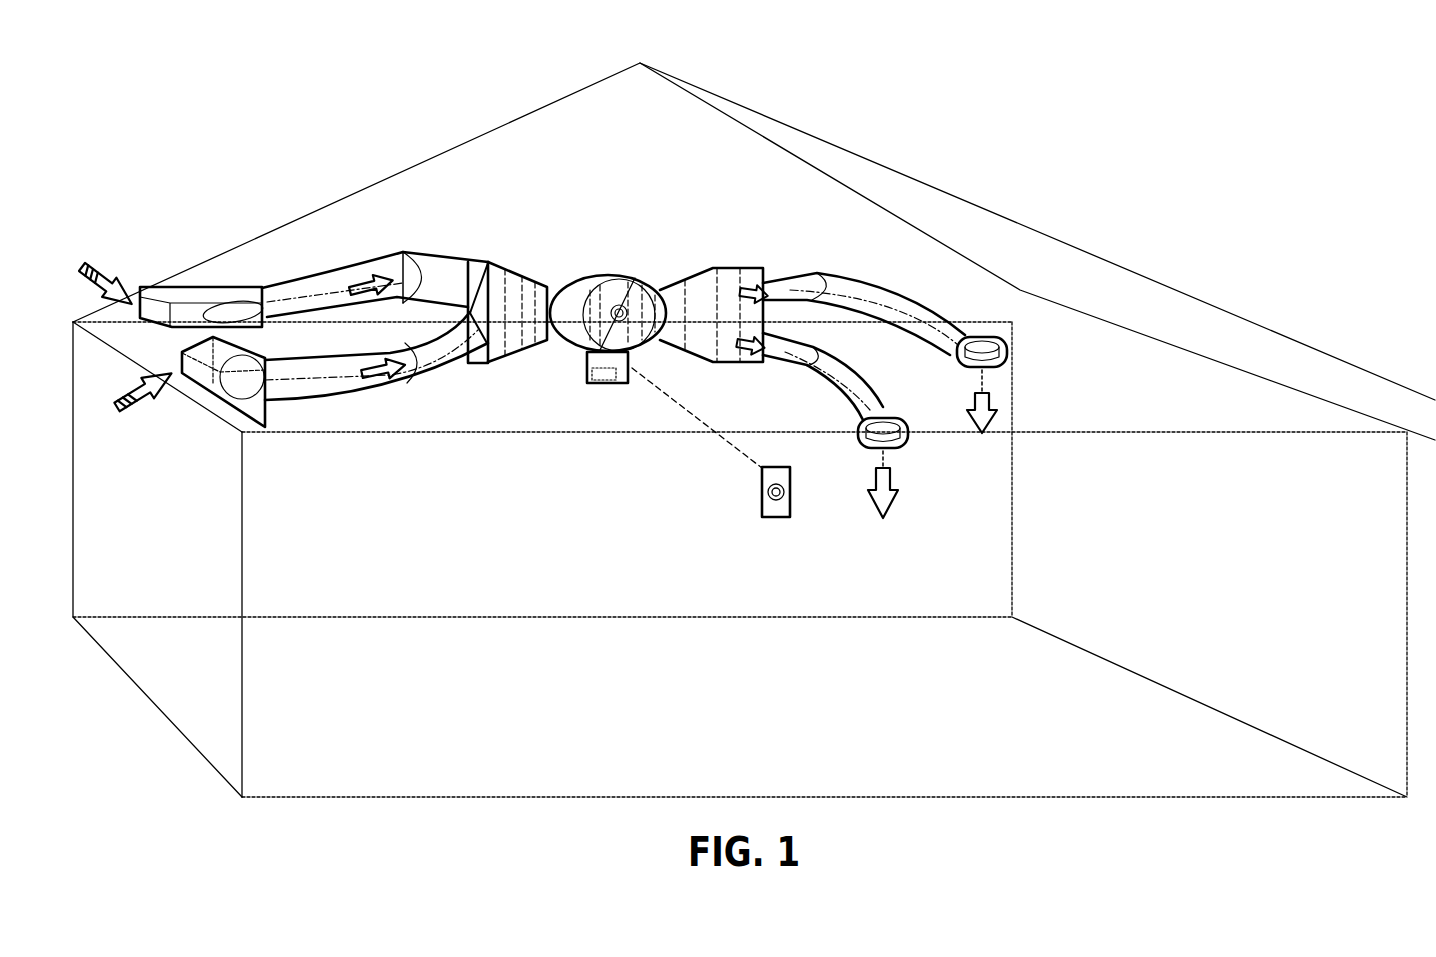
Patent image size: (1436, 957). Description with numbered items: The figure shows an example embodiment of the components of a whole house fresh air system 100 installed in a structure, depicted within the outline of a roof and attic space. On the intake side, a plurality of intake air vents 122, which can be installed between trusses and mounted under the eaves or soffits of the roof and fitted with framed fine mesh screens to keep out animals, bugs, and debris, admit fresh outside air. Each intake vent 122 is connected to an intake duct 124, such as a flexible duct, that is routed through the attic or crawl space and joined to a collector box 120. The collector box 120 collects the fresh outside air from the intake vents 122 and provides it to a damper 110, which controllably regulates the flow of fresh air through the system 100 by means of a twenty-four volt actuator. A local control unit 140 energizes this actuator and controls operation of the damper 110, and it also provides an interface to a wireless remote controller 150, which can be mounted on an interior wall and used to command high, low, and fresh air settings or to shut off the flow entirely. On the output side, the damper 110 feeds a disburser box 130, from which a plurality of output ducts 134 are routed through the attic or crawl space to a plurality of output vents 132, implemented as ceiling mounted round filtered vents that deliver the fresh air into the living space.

The whole house fresh air system 100 is at (970, 160).
The damper 110 is at (605, 290).
The collector box 120 is at (507, 268).
The intake air vent 122 is at (173, 290).
The intake duct 124 is at (317, 272).
The disburser box 130 is at (695, 277).
The output vent 132 is at (997, 367).
The output duct 134 is at (920, 298).
The local control unit 140 is at (608, 381).
The wireless remote controller 150 is at (762, 514).